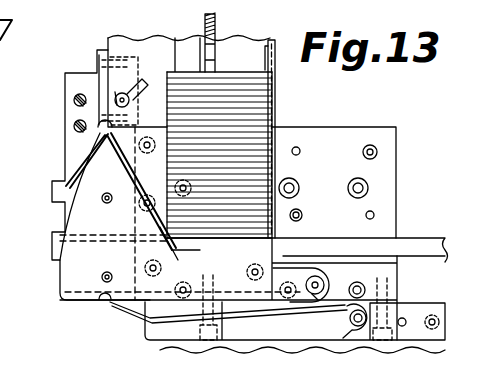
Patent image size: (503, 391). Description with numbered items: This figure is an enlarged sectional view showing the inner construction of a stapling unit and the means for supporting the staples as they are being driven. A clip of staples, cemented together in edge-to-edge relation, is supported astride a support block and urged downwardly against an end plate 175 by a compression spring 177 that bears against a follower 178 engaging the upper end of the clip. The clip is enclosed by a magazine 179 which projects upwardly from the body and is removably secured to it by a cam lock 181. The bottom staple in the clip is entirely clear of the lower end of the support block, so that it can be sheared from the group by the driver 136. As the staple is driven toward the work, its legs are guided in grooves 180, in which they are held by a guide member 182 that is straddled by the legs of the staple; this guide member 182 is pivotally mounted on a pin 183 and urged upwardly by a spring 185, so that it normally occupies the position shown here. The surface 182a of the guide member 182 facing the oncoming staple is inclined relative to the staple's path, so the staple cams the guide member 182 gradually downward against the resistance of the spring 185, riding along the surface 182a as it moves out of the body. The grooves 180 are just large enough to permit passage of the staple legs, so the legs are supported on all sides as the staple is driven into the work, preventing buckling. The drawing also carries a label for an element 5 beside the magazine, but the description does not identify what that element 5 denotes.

The cover plate 5 is at (277, 112).
The driver 136 is at (400, 242).
The end plate 175 is at (273, 254).
The compression spring 177 is at (216, 22).
The follower 178 is at (273, 42).
The magazine 179 is at (277, 80).
The grooves 180 is at (220, 250).
The cam lock 181 is at (138, 103).
The guide member 182 is at (72, 214).
The surface 182a is at (182, 258).
The pin 183 is at (323, 283).
The spring 185 is at (245, 309).